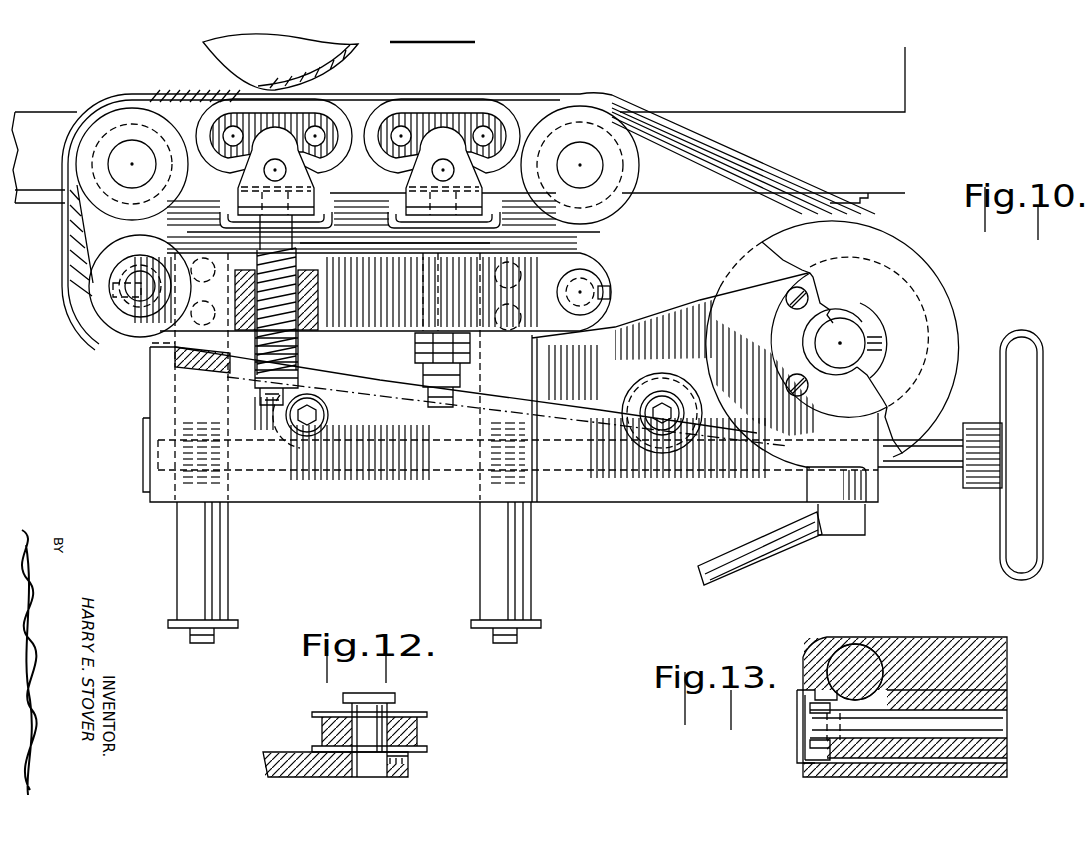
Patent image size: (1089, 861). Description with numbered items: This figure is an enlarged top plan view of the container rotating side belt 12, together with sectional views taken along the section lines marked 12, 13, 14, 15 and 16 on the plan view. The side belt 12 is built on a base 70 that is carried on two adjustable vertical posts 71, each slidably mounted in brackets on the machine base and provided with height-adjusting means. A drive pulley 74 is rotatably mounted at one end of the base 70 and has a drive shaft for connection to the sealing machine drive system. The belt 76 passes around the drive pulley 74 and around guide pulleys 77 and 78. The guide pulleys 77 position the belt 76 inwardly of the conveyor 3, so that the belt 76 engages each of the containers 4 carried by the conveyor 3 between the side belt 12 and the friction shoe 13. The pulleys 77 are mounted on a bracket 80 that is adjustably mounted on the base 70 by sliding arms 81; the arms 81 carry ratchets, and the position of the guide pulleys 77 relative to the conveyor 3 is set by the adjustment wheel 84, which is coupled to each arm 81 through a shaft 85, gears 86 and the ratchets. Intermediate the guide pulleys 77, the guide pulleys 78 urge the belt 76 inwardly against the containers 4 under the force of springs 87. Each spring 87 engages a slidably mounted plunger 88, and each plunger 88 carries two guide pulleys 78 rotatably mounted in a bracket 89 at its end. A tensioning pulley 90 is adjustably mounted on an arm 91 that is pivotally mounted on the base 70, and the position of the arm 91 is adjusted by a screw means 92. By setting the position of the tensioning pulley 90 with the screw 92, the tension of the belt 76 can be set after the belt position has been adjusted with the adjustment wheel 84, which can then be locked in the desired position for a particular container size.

In FIG. 10, the conveyor 3 is at (608, 81).
In FIG. 10, the container 4 is at (350, 50).
In FIG. 10, the side belt 12 is at (521, 162).
In FIG. 10, the friction shoe 13 is at (136, 455).
In FIG. 10, the section line 14- 14 is at (838, 177).
In FIG. 10, the section line 15- 15 is at (420, 72).
In FIG. 10, the section line 16- 16 is at (508, 210).
In FIG. 10, the base 70 is at (670, 313).
In FIG. 13, the base 70 is at (935, 640).
In FIG. 10, the adjustable vertical post 71 is at (315, 398).
In FIG. 10, the drive pulley 74 is at (917, 247).
In FIG. 10, the belt 76 is at (653, 125).
In FIG. 10, the guide pulley 77 is at (127, 113).
In FIG. 12, the guide pulley 77 is at (418, 713).
In FIG. 10, the guide pulley 78 is at (257, 92).
In FIG. 10, the bracket 80 is at (581, 237).
In FIG. 12, the bracket 80 is at (277, 750).
In FIG. 10, the sliding arm 81 is at (218, 530).
In FIG. 13, the sliding arm 81 is at (867, 653).
In FIG. 10, the adjustment wheel 84 is at (1040, 469).
In FIG. 10, the shaft 85 is at (943, 464).
In FIG. 13, the shaft 85 is at (1003, 718).
In FIG. 10, the gear 86 is at (172, 502).
In FIG. 13, the gear 86 is at (835, 695).
In FIG. 10, the spring 87 is at (300, 347).
In FIG. 10, the plunger 88 is at (262, 408).
In FIG. 10, the bracket 89 is at (316, 194).
In FIG. 10, the tensioning pulley 90 is at (106, 323).
In FIG. 10, the arm 91 is at (367, 228).
In FIG. 10, the screw means 92 is at (423, 373).